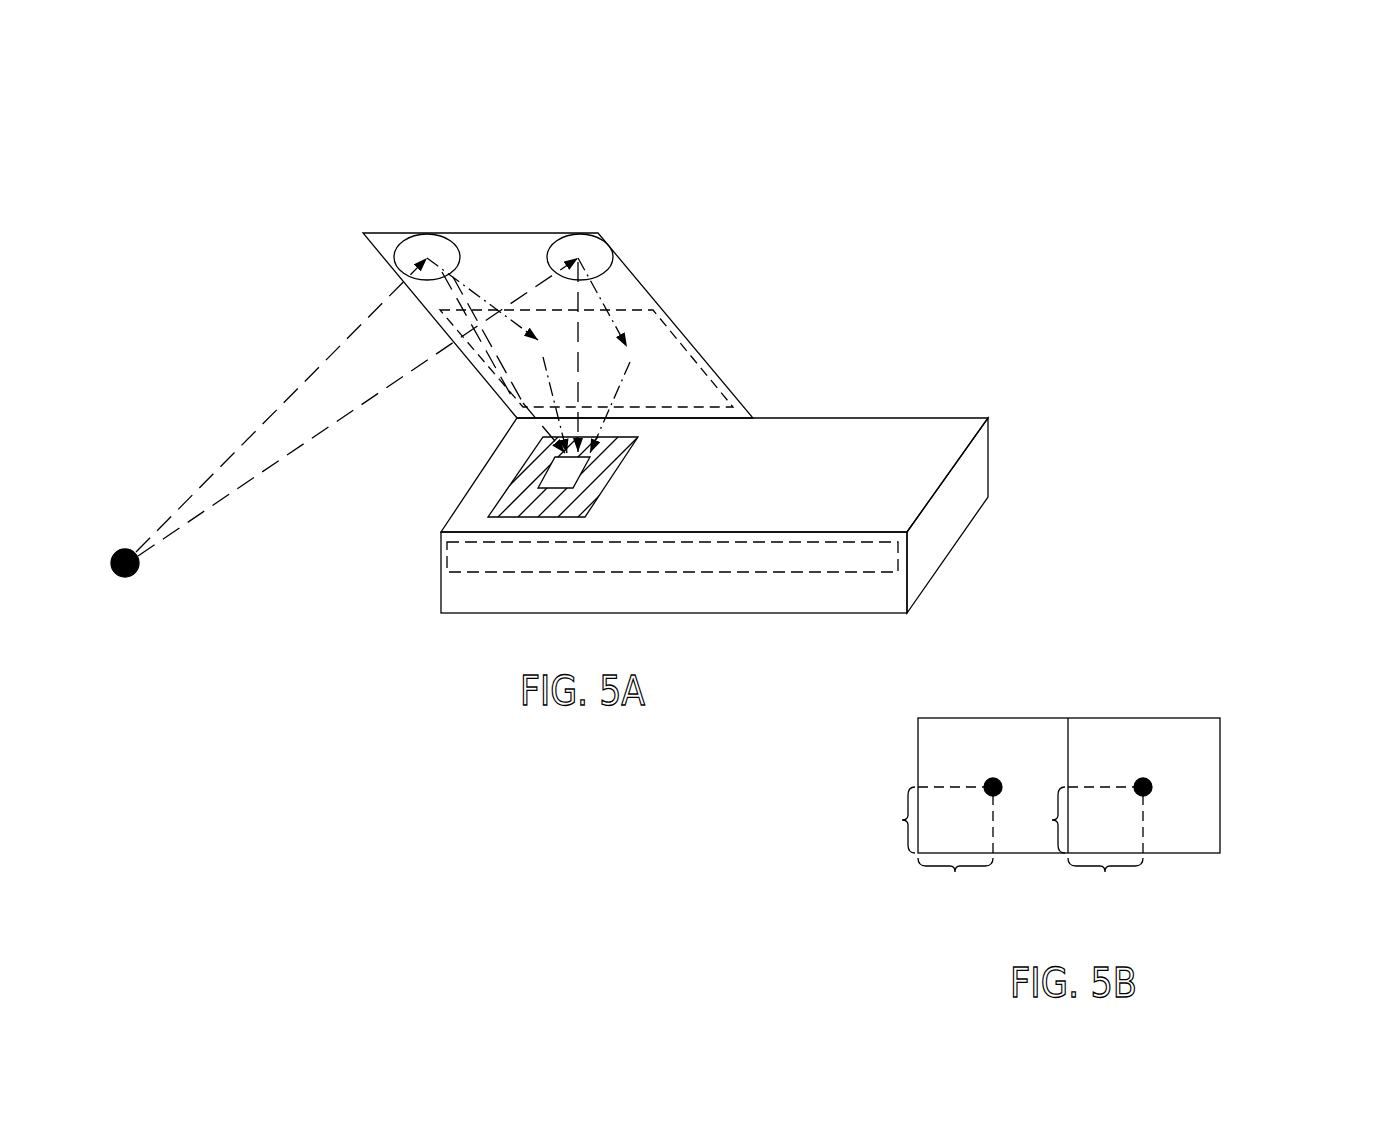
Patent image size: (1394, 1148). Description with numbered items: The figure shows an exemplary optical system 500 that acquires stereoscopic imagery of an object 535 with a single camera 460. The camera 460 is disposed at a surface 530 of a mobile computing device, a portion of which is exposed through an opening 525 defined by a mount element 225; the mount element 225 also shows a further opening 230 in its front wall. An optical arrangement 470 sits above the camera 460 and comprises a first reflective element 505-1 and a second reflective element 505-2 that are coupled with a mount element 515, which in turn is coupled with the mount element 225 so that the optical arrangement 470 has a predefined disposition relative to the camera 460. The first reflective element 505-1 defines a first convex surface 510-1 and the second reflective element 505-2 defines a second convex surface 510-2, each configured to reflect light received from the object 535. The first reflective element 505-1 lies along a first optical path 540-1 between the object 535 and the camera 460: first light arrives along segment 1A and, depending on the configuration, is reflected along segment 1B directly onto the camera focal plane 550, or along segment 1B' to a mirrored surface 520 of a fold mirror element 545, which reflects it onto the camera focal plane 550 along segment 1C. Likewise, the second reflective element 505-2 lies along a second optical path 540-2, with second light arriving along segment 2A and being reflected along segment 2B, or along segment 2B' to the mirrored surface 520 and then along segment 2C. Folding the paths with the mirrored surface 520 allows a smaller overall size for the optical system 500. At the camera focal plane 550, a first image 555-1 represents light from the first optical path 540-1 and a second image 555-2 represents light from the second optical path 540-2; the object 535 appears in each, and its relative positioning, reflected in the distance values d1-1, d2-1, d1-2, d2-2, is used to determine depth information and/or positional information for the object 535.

In FIG. 5A, the optical system 500 is at (1223, 147).
In FIG. 5A, the optical arrangement 470 is at (353, 262).
In FIG. 5A, the first reflective element 505-1 is at (719, 216).
In FIG. 5A, the first convex surface 510-1 is at (433, 250).
In FIG. 5A, the second reflective element 505-2 is at (878, 234).
In FIG. 5A, the second convex surface 510-2 is at (592, 254).
In FIG. 5A, the mount element 515 is at (667, 313).
In FIG. 5A, the mirrored surface 520 is at (670, 352).
In FIG. 5A, the fold mirror element 545 is at (760, 354).
In FIG. 5A, the surface 530 is at (620, 448).
In FIG. 5A, the camera 460 is at (588, 468).
In FIG. 5A, the opening 525 is at (602, 497).
In FIG. 5A, the mount element 225 is at (834, 515).
In FIG. 5A, the opening 230 is at (905, 562).
In FIG. 5A, the object 535 is at (110, 572).
In FIG. 5B, the object 535 is at (1000, 780).
In FIG. 5A, the first optical path 540-1 is at (322, 399).
In FIG. 5A, the second optical path 540-2 is at (414, 418).
In FIG. 5A, the segment 1A is at (258, 426).
In FIG. 5A, the segment 1B is at (477, 362).
In FIG. 5A, the segment 1B' is at (482, 293).
In FIG. 5A, the segment 1C is at (543, 352).
In FIG. 5A, the segment 2A is at (353, 410).
In FIG. 5A, the segment 2B is at (507, 357).
In FIG. 5A, the segment 2B' is at (634, 293).
In FIG. 5A, the segment 2C is at (617, 387).
In FIG. 5B, the camera focal plane 550 is at (1122, 693).
In FIG. 5B, the first image 555-1 is at (1028, 857).
In FIG. 5B, the second image 555-2 is at (1187, 857).
In FIG. 5B, the distance value d1-1 is at (883, 820).
In FIG. 5B, the distance value d1-2 is at (1036, 820).
In FIG. 5B, the distance value d2-1 is at (955, 879).
In FIG. 5B, the distance value d2-2 is at (1105, 879).